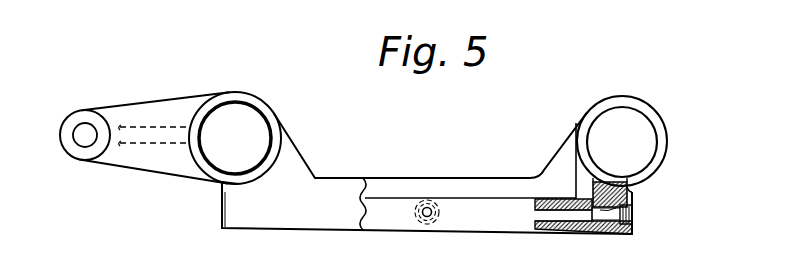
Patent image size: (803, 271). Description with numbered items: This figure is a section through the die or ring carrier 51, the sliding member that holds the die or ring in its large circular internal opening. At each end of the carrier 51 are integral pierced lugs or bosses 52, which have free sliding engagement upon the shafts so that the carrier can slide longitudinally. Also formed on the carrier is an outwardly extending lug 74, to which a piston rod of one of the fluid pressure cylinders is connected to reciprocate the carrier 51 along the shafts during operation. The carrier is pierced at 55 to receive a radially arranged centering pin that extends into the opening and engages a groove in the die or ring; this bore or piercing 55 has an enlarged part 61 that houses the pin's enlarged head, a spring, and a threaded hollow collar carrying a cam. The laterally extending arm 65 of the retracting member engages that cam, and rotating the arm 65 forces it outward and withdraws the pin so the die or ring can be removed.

The die or ring carrier 51 is at (552, 204).
The pierced lugs or bosses 52 is at (255, 100).
The bore or piercing 55 is at (431, 206).
The enlarged part of the bore 61 is at (633, 211).
The laterally extending arm 65 is at (380, 190).
The outwardly extending lugs 74 is at (146, 113).